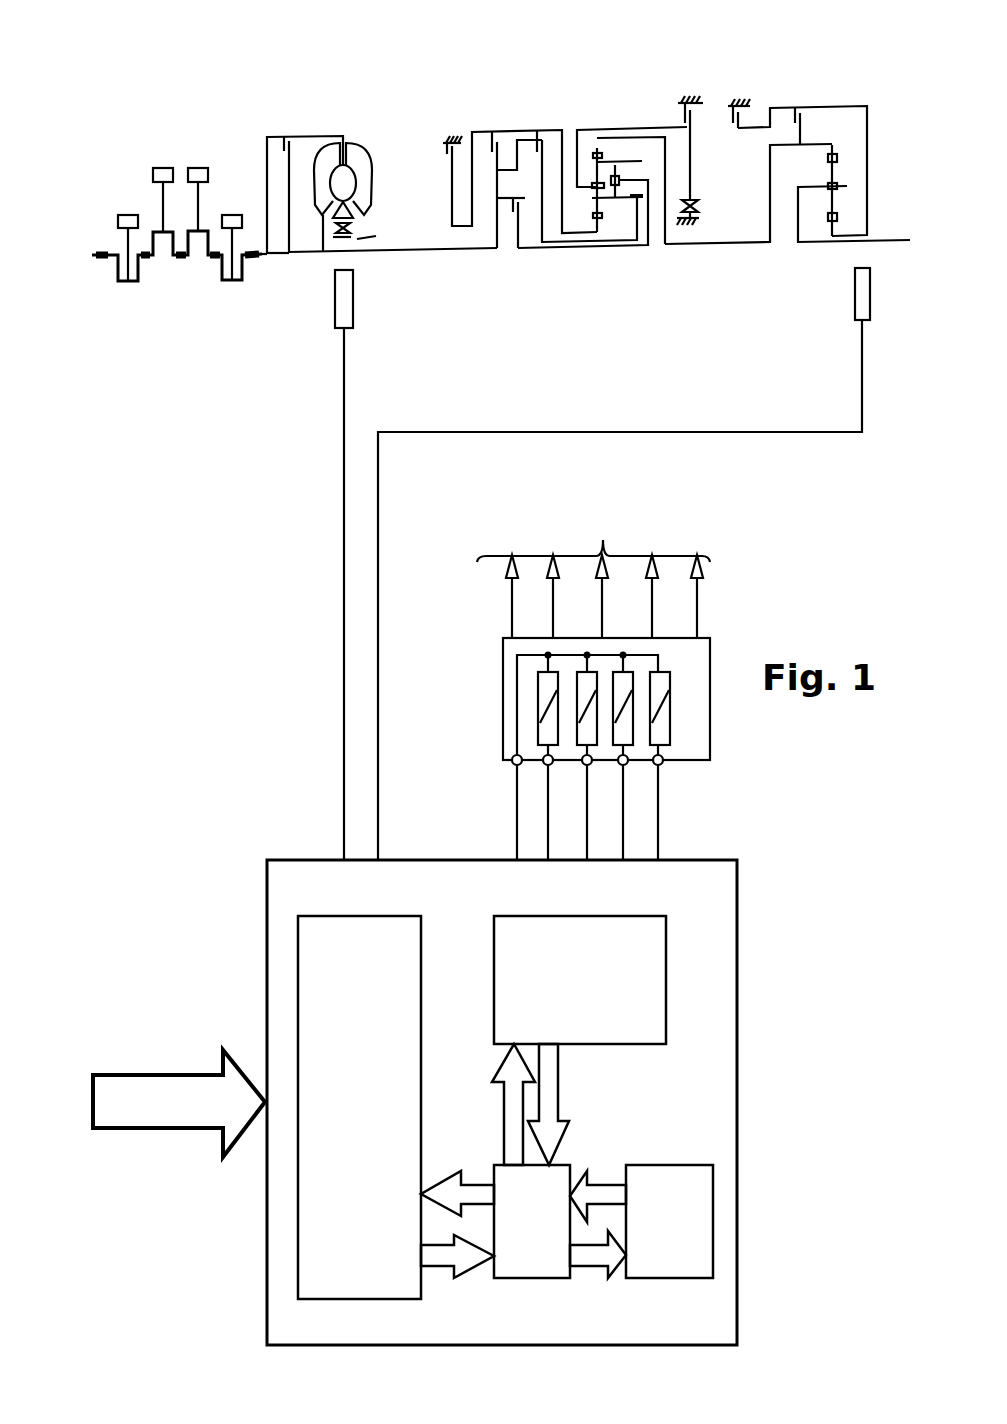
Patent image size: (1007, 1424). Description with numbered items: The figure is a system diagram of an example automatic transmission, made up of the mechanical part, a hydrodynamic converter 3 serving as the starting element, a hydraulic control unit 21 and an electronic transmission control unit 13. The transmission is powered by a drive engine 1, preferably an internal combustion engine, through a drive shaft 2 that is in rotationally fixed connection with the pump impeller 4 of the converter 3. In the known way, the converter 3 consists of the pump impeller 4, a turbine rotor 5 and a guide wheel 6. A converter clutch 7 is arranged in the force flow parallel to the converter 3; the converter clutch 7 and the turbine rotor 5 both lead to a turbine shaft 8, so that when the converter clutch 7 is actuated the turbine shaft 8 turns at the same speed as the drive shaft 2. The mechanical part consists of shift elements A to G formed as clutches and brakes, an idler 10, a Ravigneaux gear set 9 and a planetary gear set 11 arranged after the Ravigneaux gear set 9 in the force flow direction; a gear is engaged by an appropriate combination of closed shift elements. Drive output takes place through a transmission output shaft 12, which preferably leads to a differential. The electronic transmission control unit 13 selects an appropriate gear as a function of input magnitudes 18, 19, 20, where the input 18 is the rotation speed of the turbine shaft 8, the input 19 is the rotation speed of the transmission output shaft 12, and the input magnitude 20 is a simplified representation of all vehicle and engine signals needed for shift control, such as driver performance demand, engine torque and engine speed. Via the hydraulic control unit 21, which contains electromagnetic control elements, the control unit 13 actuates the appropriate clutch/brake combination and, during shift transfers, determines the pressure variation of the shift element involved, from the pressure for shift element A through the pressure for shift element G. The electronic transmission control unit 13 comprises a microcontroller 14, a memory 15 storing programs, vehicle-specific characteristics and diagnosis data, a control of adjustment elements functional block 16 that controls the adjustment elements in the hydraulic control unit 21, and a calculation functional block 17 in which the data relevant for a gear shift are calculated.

The drive engine 1 is at (136, 192).
The drive shaft 2 is at (262, 259).
The hydrodynamic converter 3 is at (357, 116).
The pump impeller 4 is at (359, 178).
The turbine rotor 5 is at (321, 187).
The guide wheel 6 is at (346, 218).
The converter clutch 7 is at (276, 89).
The turbine shaft 8 is at (395, 252).
The Ravigneaux gear set 9 is at (596, 283).
The idler 10 is at (701, 278).
The planetary gear set 11 is at (807, 277).
The transmission output shaft 12 is at (883, 250).
The electronic transmission control unit 13 is at (484, 1124).
The microcontroller 14 is at (547, 1265).
The memory 15 is at (682, 1265).
The control of adjustment elements functional block 16 is at (609, 1037).
The calculation functional block 17 is at (376, 1265).
The input magnitude 18 is at (342, 667).
The input magnitude 19 is at (378, 737).
The input magnitude 20 is at (179, 1103).
The hydraulic control unit 21 is at (693, 733).